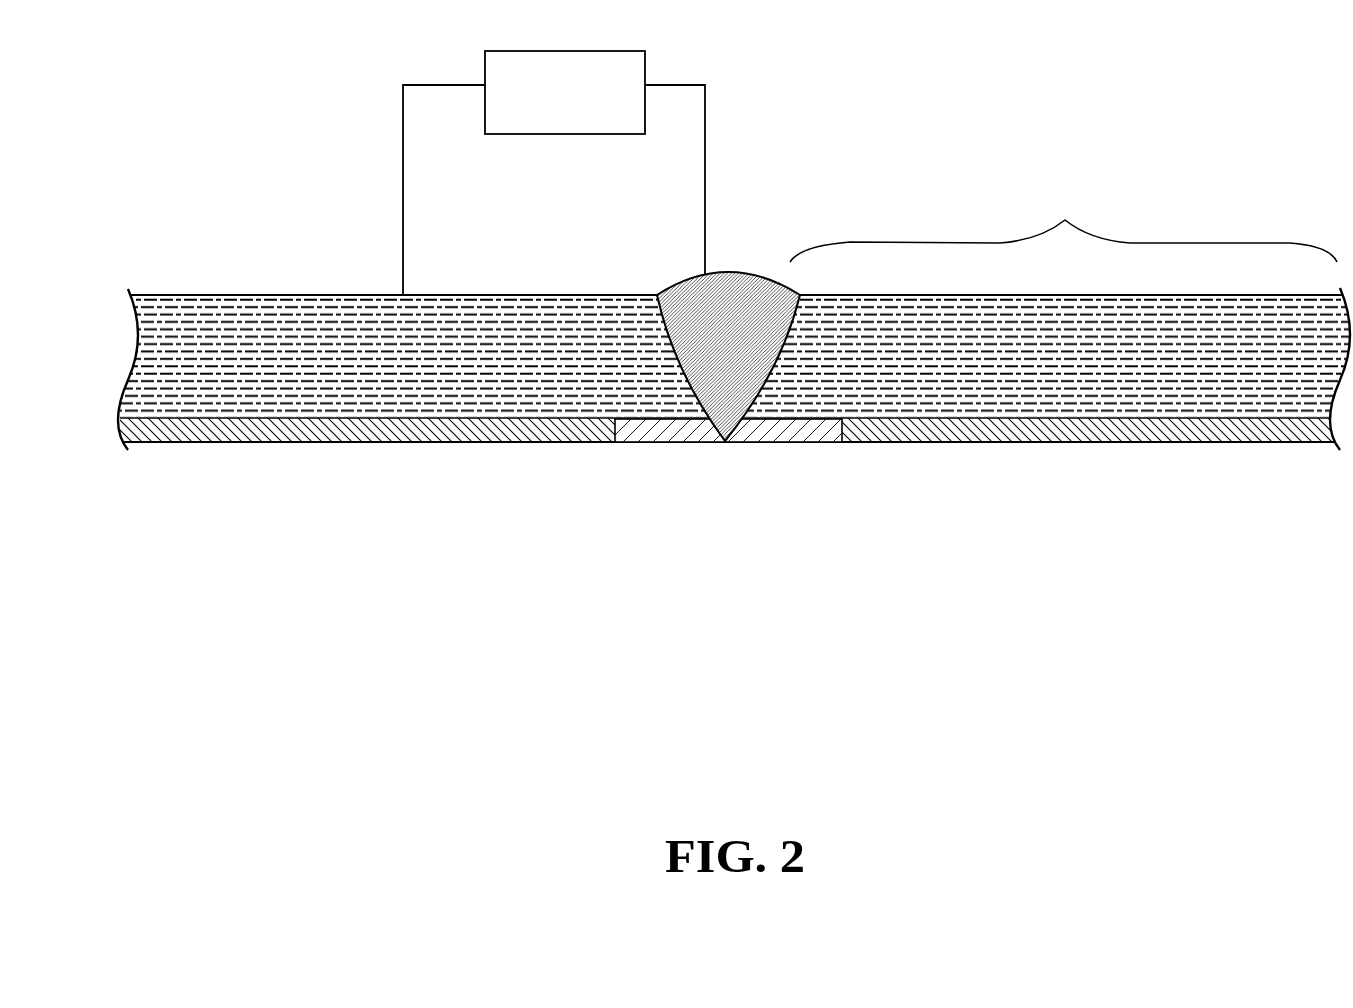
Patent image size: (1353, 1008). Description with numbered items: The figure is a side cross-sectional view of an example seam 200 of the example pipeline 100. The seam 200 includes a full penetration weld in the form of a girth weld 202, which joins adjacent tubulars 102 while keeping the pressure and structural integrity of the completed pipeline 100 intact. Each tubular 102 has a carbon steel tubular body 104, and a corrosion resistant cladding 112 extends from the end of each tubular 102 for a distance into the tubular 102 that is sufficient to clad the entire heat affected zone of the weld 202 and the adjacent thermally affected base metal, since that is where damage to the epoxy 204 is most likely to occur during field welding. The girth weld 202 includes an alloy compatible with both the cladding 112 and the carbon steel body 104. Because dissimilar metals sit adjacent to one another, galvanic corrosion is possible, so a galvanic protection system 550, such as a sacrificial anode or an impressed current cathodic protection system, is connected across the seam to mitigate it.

The pipeline 100 is at (217, 160).
The tubular 102 is at (734, 316).
The carbon steel tubular body 104 is at (320, 295).
The corrosion resistant cladding 112 is at (780, 432).
The seam 200 is at (624, 560).
The girth weld 202 is at (765, 276).
The epoxy 204 is at (1100, 442).
The galvanic protection system 550 is at (590, 111).